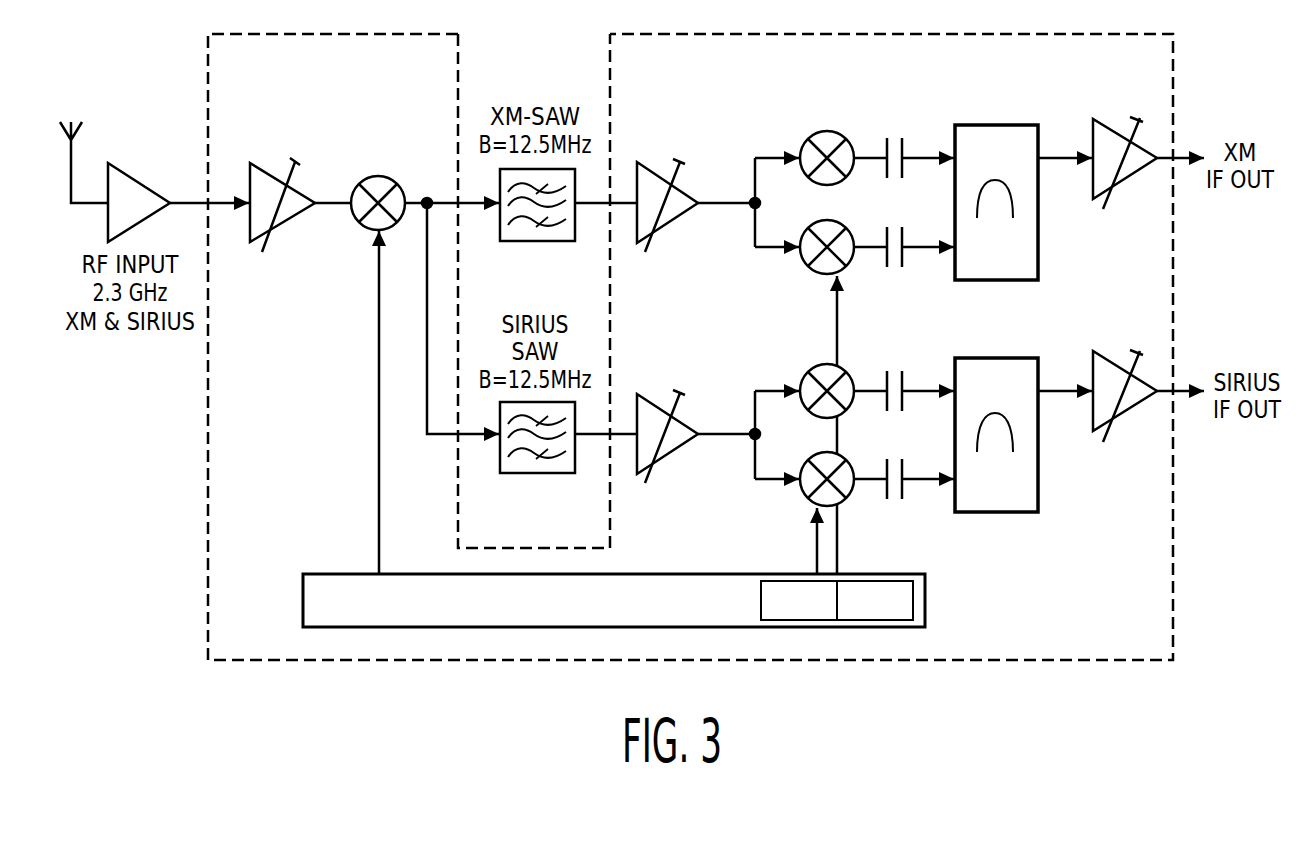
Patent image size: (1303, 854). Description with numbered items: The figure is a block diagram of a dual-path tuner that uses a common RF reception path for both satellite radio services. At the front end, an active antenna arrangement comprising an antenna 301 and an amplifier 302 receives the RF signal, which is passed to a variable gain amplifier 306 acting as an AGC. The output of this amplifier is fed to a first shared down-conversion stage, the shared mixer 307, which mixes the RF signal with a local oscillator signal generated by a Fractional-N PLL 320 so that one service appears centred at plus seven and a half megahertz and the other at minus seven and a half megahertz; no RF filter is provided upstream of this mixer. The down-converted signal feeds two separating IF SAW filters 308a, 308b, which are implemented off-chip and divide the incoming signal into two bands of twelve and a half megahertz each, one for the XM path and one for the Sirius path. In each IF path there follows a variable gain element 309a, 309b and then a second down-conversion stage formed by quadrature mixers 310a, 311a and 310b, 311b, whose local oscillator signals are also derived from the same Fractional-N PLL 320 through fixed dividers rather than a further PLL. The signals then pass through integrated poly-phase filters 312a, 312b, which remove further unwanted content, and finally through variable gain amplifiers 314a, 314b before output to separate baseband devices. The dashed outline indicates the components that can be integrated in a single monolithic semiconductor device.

The antenna 301 is at (74, 137).
The amplifier 302 is at (140, 178).
The variable gain amplifier 306 is at (262, 170).
The shared mixer 307 is at (363, 174).
The IF SAW filter 308a is at (522, 242).
The IF SAW filter 308b is at (528, 473).
The variable gain element 309a is at (673, 223).
The variable gain element 309b is at (673, 457).
The second down-conversion stage mixer 310a is at (818, 132).
The second down-conversion stage mixer 310b is at (816, 370).
The second down-conversion stage mixer 311a is at (812, 268).
The second down-conversion stage mixer 311b is at (808, 497).
The integrated poly-phase filter 312a is at (983, 125).
The integrated poly-phase filter 312b is at (1010, 512).
The variable gain amplifier 314a is at (1110, 122).
The variable gain amplifier 314b is at (1128, 417).
The Fractional-N PLL 320 is at (327, 573).